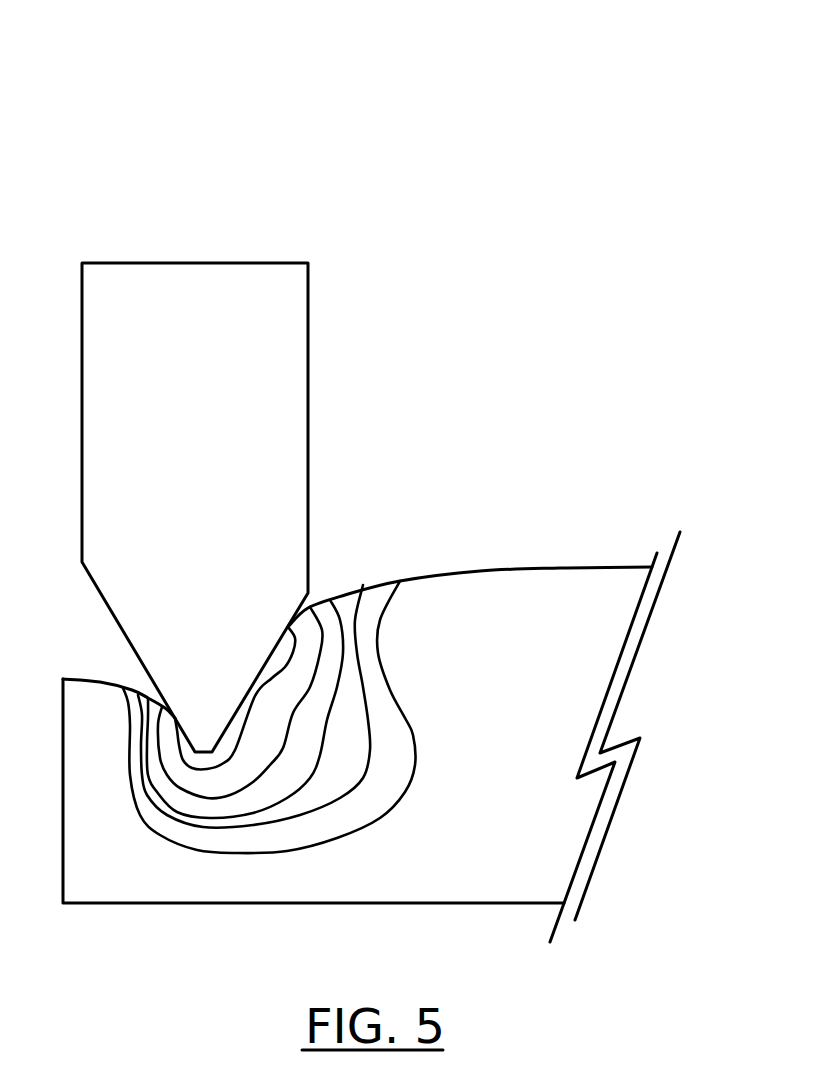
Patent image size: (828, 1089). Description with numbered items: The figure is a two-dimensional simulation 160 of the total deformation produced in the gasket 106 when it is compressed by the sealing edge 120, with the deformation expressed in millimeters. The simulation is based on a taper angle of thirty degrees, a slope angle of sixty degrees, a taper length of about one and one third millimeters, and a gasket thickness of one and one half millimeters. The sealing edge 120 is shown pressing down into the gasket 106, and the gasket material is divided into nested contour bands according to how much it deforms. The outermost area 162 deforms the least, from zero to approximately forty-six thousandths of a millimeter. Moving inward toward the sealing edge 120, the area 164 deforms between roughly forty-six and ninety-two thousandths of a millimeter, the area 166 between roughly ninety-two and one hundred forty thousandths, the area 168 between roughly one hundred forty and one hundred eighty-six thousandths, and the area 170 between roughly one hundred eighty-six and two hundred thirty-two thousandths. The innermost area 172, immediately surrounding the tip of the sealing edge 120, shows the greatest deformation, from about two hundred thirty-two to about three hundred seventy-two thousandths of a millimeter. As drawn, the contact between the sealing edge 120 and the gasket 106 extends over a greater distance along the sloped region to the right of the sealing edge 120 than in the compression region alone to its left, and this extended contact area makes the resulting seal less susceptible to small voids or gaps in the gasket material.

The two-dimensional simulation 160 is at (317, 83).
The sealing edge 120 is at (140, 262).
The gasket 106 is at (568, 567).
The area 162 is at (549, 618).
The area 164 is at (372, 645).
The area 166 is at (350, 684).
The area 168 is at (313, 723).
The area 170 is at (265, 733).
The area 172 is at (225, 747).